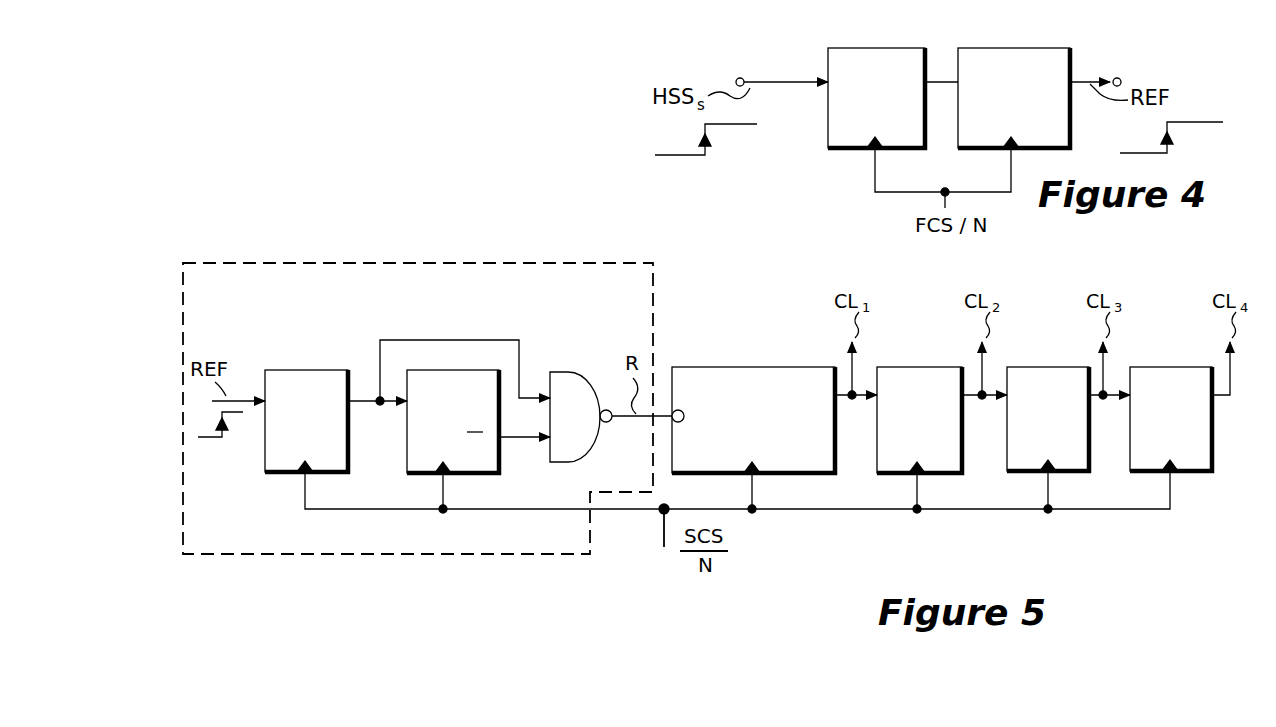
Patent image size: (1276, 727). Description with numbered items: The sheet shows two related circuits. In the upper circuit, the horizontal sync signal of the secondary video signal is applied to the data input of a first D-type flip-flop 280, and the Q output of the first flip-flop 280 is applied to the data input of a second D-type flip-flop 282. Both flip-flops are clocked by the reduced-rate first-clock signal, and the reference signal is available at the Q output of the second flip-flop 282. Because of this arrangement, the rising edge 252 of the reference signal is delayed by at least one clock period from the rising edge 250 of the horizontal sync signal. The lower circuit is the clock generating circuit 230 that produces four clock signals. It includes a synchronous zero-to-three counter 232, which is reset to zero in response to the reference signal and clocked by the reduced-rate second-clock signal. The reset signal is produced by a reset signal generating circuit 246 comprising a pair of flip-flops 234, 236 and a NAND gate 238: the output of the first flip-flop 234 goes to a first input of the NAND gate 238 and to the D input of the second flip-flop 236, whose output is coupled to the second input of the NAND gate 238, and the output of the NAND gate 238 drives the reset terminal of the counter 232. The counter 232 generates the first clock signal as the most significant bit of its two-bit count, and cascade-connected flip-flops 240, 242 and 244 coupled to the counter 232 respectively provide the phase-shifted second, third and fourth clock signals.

In FIG. 4, the first D-type flip-flop 280 is at (828, 60).
In FIG. 4, the second D-type flip-flop 282 is at (1070, 58).
In FIG. 4, the rising edge of horizontal sync signal HSS_S 250 is at (708, 148).
In FIG. 4, the rising edge of reference signal REF 252 is at (1170, 146).
In FIG. 5, the rising edge of reference signal REF 252 is at (222, 440).
In FIG. 5, the reset signal generating circuit 246 is at (608, 263).
In FIG. 5, the first flip-flop 234 is at (316, 370).
In FIG. 5, the second flip-flop 236 is at (407, 460).
In FIG. 5, the NAND gate 238 is at (564, 372).
In FIG. 5, the synchronous 0–3 counter 232 is at (736, 367).
In FIG. 5, the cascade-connected flip-flop 240 is at (908, 367).
In FIG. 5, the cascade-connected flip-flop 242 is at (1042, 367).
In FIG. 5, the cascade-connected flip-flop 244 is at (1160, 367).
In FIG. 5, the clock generating circuit 230 is at (842, 572).